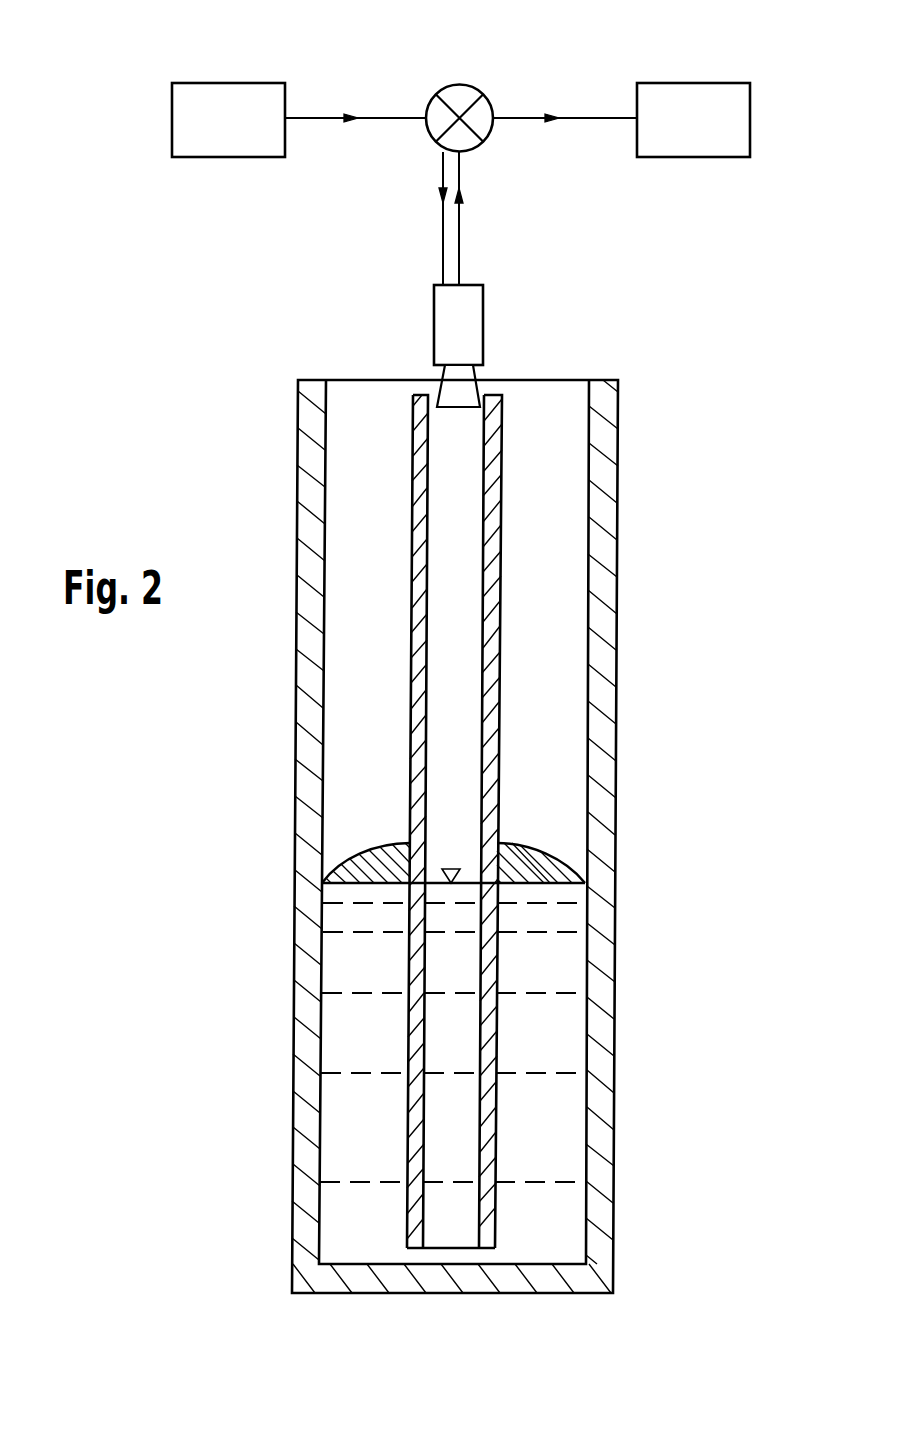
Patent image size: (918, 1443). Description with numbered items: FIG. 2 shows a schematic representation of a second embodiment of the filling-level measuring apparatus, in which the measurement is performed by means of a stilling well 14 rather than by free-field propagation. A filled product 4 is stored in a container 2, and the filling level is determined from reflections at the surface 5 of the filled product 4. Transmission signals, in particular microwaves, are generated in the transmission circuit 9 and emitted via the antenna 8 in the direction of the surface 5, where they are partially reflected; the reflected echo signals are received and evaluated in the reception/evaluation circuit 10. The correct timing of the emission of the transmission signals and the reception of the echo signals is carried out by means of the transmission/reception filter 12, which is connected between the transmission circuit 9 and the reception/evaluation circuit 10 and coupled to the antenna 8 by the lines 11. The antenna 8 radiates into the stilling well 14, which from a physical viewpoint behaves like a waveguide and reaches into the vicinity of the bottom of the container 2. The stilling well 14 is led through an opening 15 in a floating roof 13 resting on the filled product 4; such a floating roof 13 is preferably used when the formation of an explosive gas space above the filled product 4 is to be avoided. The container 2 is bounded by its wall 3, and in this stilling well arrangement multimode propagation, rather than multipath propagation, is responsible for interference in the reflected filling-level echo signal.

The container 2 is at (189, 1133).
The container 3 is at (600, 648).
The filled product 4 is at (557, 1132).
The surface 5 is at (373, 880).
The antenna 8 is at (470, 320).
The transmission circuit 9 is at (215, 100).
The reception/evaluation circuit 10 is at (697, 100).
The lines 11 is at (459, 247).
The transmission/reception filter 12 is at (461, 95).
The floating roof 13 is at (528, 868).
The stilling well 14 is at (420, 518).
The opening 15 is at (408, 885).